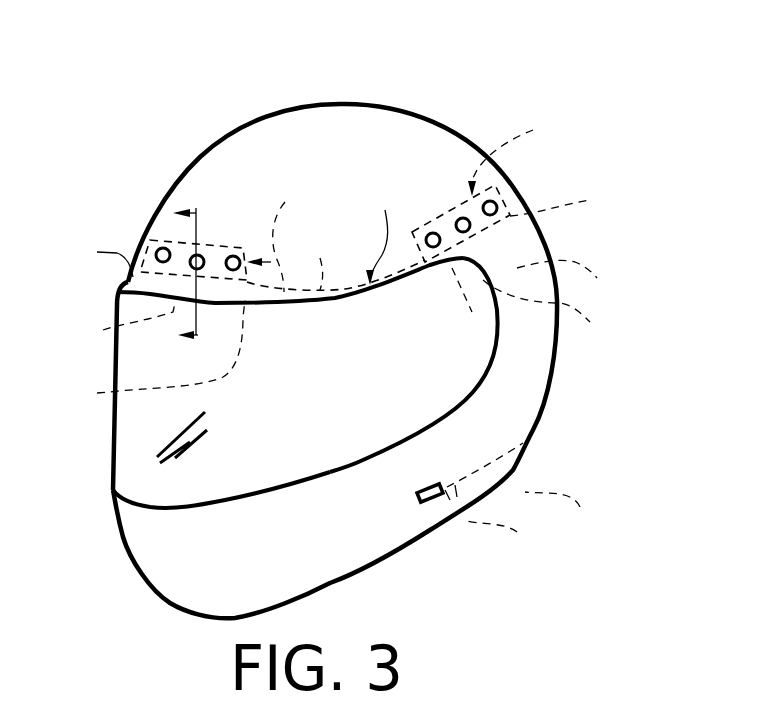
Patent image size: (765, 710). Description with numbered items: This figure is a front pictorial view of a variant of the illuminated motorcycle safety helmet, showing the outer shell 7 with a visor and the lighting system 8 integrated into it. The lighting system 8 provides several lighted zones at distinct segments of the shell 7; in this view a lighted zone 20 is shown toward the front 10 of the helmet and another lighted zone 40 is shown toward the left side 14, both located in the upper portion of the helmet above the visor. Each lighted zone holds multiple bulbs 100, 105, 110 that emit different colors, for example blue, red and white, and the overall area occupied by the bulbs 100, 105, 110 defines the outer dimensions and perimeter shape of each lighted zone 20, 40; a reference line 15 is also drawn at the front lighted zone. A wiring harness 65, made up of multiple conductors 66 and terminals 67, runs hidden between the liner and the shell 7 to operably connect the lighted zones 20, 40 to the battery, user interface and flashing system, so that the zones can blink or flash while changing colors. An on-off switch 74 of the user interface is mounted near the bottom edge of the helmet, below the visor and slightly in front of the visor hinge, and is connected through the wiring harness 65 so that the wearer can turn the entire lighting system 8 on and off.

The shell 7 is at (355, 130).
The lighting system 8 is at (228, 180).
The front 10 is at (157, 417).
The left side 14 is at (420, 369).
The visor pivot axis 15 is at (193, 274).
The lighted zone 20 is at (292, 232).
The lighted zone 40 is at (516, 148).
The wiring harness 65 is at (384, 233).
The conductors 66 is at (420, 381).
The terminals 67 is at (346, 378).
The on-off switch 74 is at (425, 503).
The bulb 100 is at (143, 262).
The bulb 105 is at (167, 288).
The bulb 110 is at (235, 250).